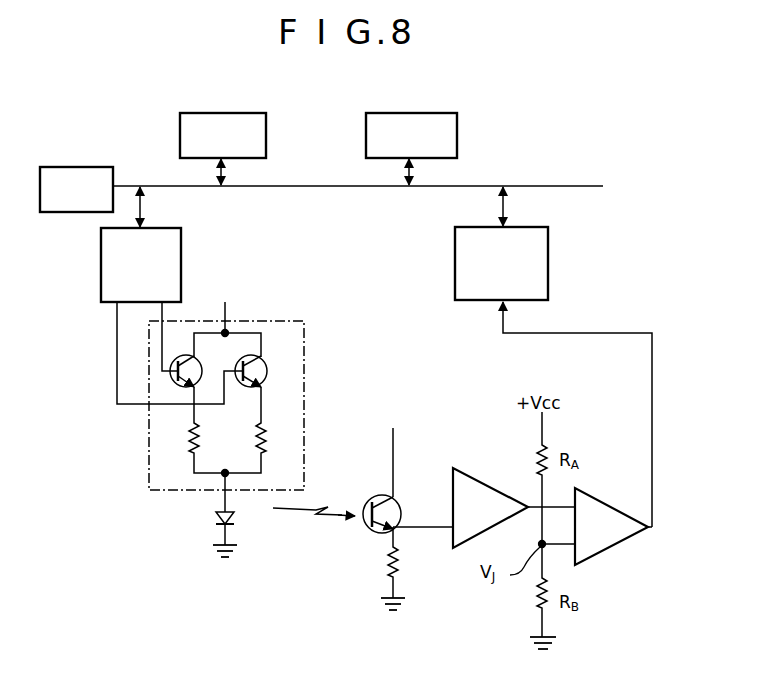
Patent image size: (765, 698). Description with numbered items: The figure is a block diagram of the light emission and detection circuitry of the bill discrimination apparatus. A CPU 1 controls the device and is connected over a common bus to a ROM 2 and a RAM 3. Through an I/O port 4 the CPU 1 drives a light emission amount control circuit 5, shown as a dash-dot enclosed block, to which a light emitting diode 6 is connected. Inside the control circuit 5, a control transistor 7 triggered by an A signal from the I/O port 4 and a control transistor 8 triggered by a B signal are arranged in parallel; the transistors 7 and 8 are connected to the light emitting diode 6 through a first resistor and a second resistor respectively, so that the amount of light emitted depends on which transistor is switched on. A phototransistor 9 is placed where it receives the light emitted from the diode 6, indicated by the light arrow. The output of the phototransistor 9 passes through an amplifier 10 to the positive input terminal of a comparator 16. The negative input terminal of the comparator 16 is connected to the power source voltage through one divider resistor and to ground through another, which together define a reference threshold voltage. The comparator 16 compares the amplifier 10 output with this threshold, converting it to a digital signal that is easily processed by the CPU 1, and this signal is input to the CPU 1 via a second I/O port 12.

The CPU 1 is at (82, 168).
The ROM 2 is at (250, 112).
The RAM 3 is at (407, 112).
The I/O port 4 is at (181, 244).
The light emission amount control circuit 5 is at (230, 386).
The light emitting diode 6 is at (232, 519).
The control transistor 7 is at (199, 363).
The control transistor 8 is at (265, 362).
The phototransistor 9 is at (379, 495).
The amplifier 10 is at (492, 479).
The I/O port 12 is at (548, 266).
The comparator 16 is at (612, 500).